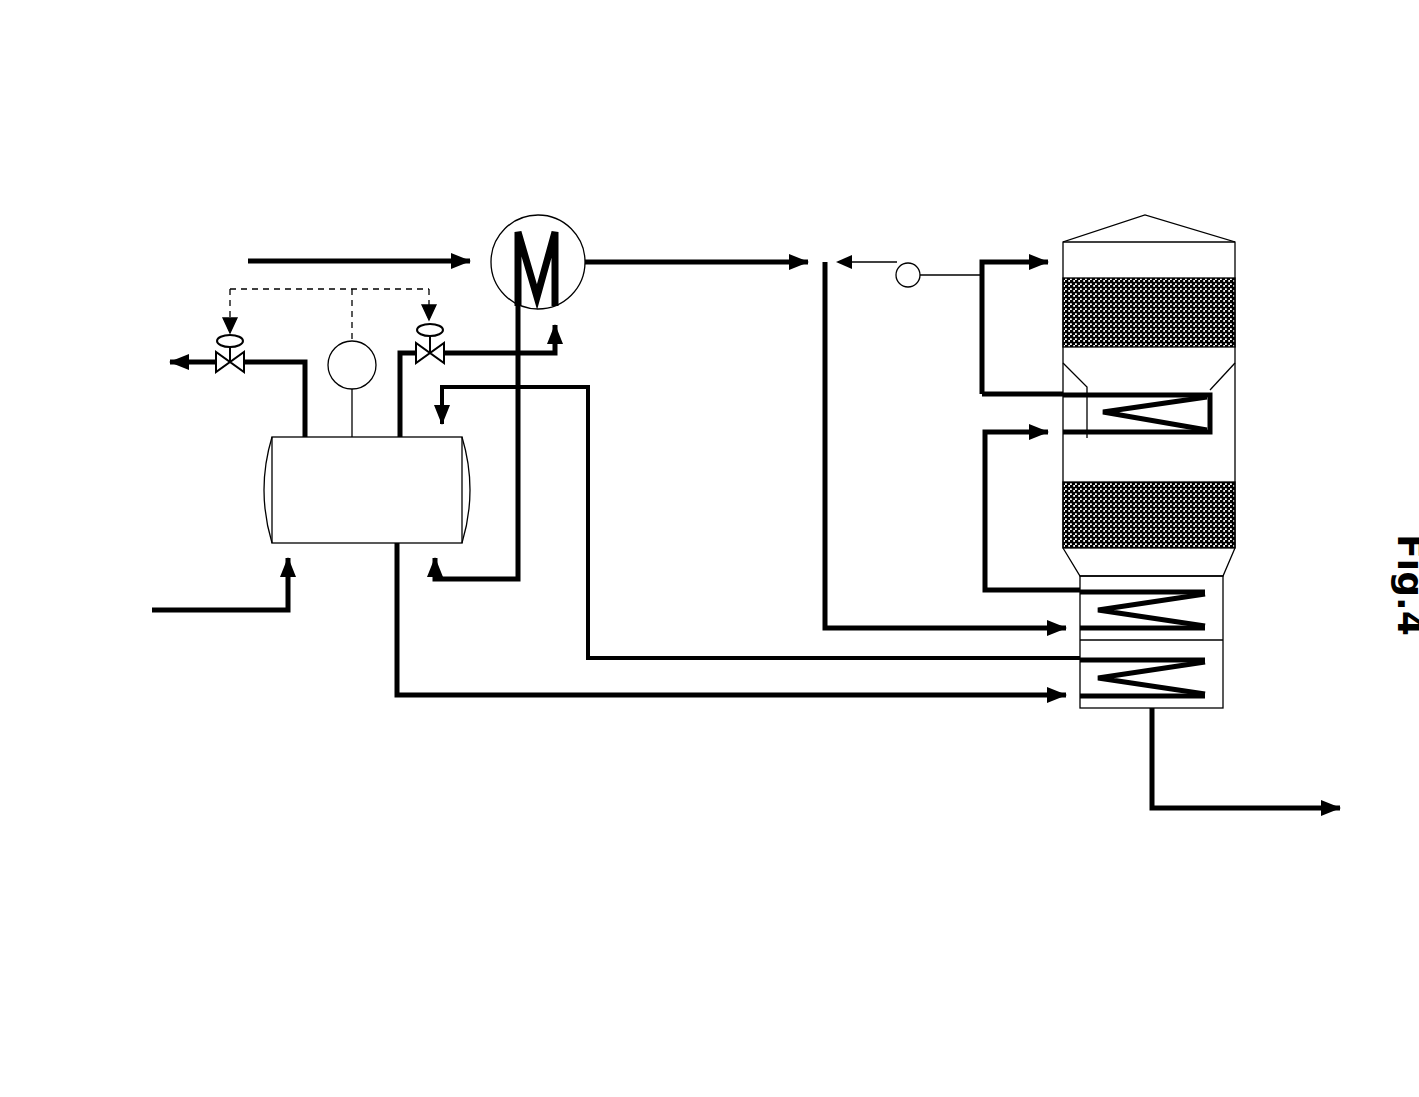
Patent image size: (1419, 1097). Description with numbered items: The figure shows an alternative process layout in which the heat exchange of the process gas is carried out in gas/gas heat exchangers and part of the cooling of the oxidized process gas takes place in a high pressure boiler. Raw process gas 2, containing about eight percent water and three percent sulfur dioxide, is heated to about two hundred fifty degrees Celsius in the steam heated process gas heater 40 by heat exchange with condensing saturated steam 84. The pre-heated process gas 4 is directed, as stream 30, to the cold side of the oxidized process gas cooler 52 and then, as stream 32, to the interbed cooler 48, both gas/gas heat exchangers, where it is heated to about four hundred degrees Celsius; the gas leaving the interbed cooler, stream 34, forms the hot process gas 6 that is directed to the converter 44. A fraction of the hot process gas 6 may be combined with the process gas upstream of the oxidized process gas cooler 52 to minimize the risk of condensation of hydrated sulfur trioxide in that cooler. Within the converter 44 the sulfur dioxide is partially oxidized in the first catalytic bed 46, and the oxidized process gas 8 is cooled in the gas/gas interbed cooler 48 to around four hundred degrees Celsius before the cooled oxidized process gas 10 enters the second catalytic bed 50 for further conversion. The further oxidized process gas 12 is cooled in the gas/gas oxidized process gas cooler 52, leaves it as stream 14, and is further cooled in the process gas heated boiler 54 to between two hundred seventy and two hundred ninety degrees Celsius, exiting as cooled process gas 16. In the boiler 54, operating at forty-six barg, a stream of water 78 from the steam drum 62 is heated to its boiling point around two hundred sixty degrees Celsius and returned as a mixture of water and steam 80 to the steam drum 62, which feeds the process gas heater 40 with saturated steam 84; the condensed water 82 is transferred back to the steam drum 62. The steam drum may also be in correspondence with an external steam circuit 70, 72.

The raw process gas 2 is at (360, 262).
The pre-heated process gas 4 is at (668, 262).
The hot process gas 6 is at (1000, 262).
The oxidized process gas 8 is at (1157, 381).
The cooled oxidized process gas 10 is at (1157, 462).
The further oxidized process gas 12 is at (1160, 572).
The bottom column section 14 is at (1160, 650).
The bottoms product stream 16 is at (1280, 808).
The bypass stream 30 is at (924, 628).
The intermediate stream 32 is at (985, 553).
The side stream 34 is at (980, 378).
The steam heated process gas heater 40 is at (540, 216).
The converter 44 is at (1118, 222).
The first catalytic bed 46 is at (1232, 312).
The interbed cooler 48 is at (1193, 418).
The second catalytic bed 50 is at (1232, 498).
The oxidized process gas cooler 52 is at (1195, 603).
The process gas heated boiler 54 is at (1195, 687).
The steam drum 62 is at (380, 543).
The external steam circuit 70 is at (180, 610).
The external steam circuit 72 is at (180, 362).
The stream of water 78 is at (538, 695).
The mixture of water and steam 80 is at (696, 658).
The condensed water 82 is at (466, 580).
The saturated steam 84 is at (557, 352).